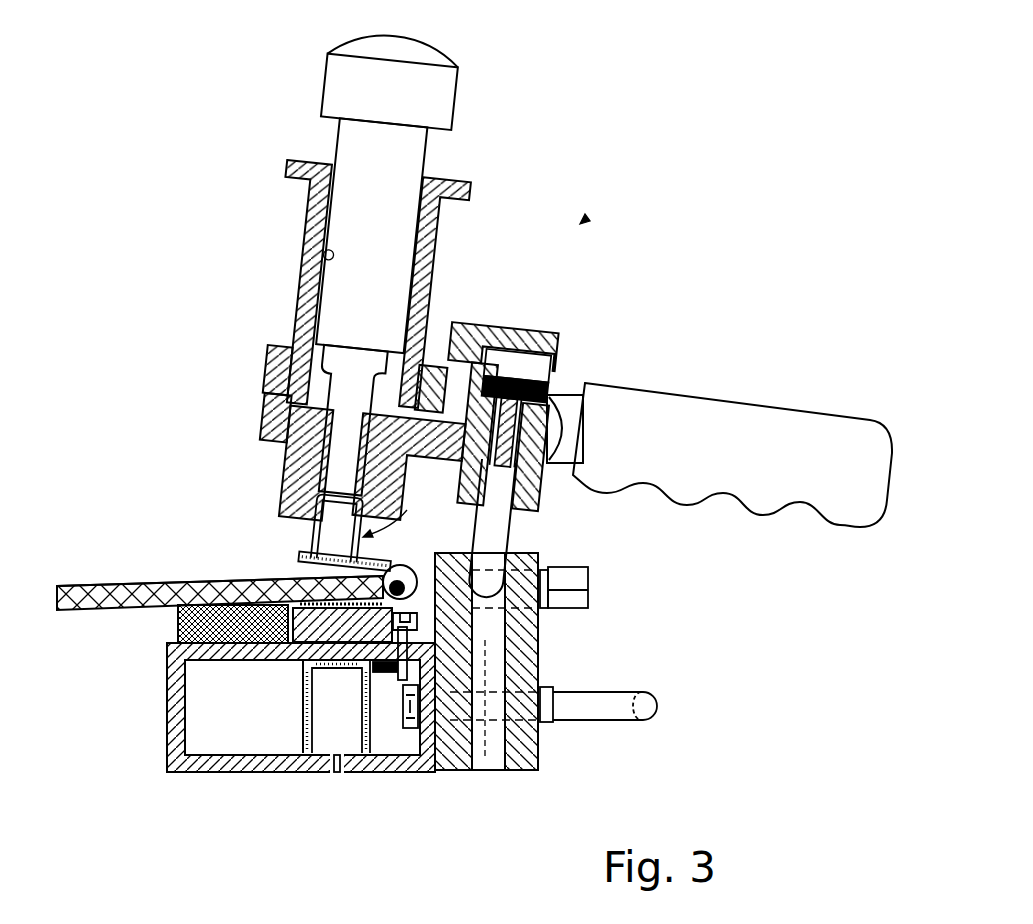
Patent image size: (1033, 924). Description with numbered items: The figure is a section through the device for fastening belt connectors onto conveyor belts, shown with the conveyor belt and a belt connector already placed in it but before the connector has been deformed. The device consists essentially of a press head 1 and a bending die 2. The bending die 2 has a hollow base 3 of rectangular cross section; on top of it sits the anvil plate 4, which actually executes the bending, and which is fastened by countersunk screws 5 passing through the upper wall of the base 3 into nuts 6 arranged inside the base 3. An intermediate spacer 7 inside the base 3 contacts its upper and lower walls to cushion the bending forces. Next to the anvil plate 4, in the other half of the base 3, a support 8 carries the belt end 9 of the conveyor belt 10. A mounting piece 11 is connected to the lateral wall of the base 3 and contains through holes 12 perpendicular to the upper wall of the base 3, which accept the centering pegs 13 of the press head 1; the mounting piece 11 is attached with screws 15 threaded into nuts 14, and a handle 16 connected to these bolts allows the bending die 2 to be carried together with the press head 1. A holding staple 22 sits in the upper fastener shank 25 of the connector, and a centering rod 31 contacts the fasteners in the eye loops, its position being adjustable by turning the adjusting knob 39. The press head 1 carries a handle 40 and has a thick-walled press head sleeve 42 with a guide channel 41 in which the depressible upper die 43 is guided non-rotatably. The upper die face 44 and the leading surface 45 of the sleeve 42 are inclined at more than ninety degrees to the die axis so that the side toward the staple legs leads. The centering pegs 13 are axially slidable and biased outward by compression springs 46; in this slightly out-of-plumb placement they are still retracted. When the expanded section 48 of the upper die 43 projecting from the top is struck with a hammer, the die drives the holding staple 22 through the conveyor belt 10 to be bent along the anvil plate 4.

The press head 1 is at (582, 222).
The bending die 2 is at (337, 790).
The base 3 is at (217, 763).
The anvil plate 4 is at (312, 630).
The screws 5 is at (405, 673).
The nuts 6 is at (360, 668).
The intermediate spacer 7 is at (303, 733).
The support 8 is at (178, 627).
The belt end 9 is at (222, 572).
The conveyor belt 10 is at (143, 590).
The mounting piece 11 is at (525, 648).
The through holes 12 is at (490, 672).
The centering pegs 13 is at (500, 536).
The nuts 14 is at (403, 710).
The screws 15 is at (485, 710).
The handle 16 is at (597, 710).
The holding staples 22 is at (398, 515).
The upper fastener shank 25 is at (373, 558).
The centering rod 31 is at (441, 582).
The adjusting knob 39 is at (580, 573).
The handle 40 is at (702, 410).
The guide channel 41 is at (317, 477).
The press head sleeve 42 is at (290, 460).
The upper die 43 is at (342, 452).
The upper die face 44 is at (352, 490).
The leading surface 45 is at (317, 519).
The compression springs 46 is at (553, 367).
The expanded section 48 is at (445, 85).